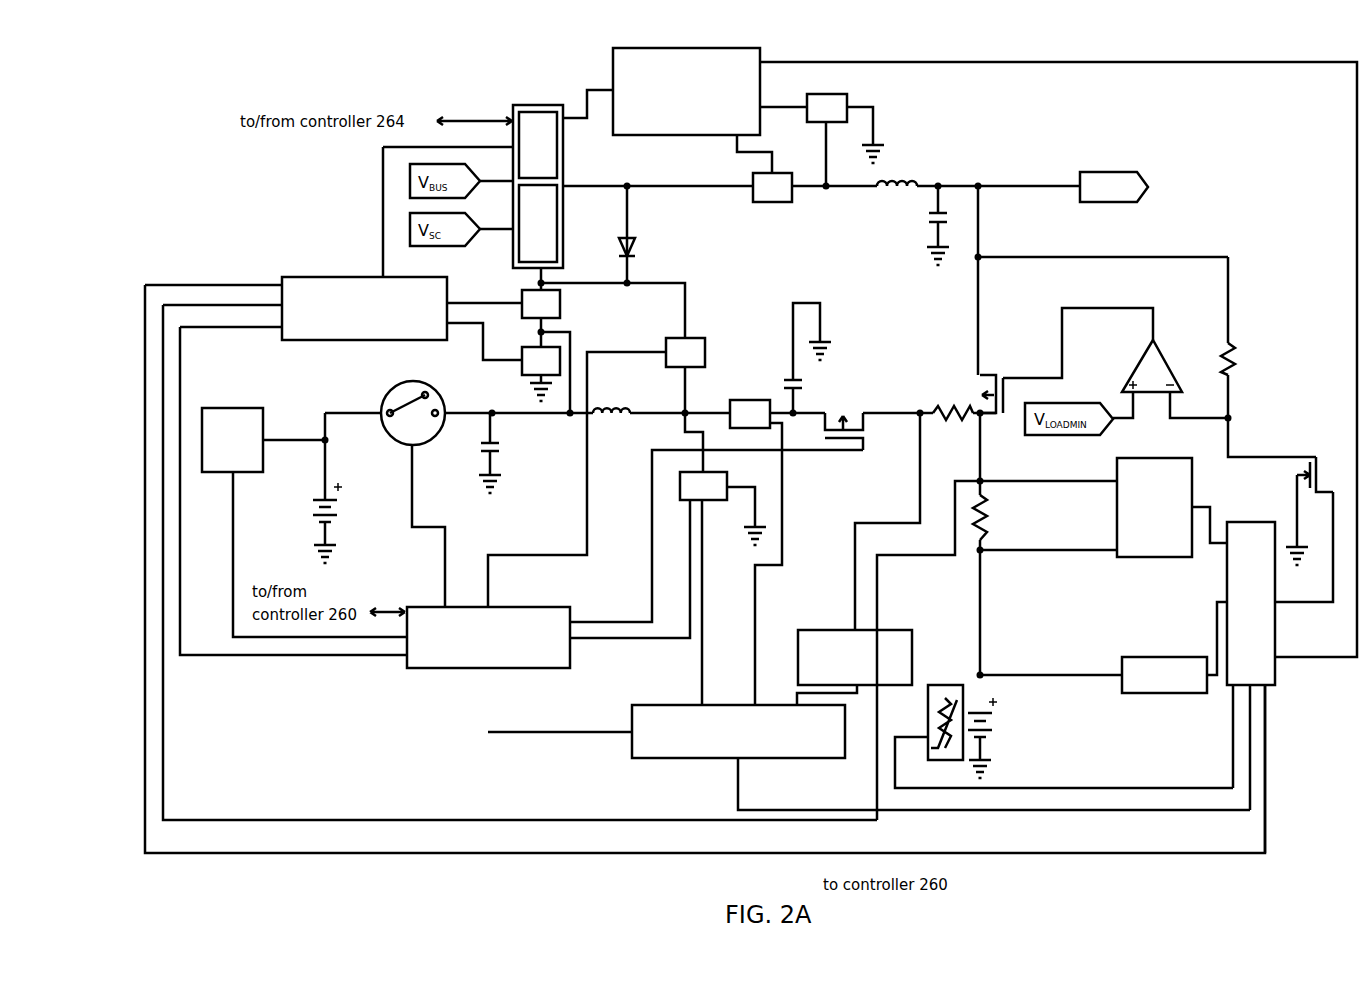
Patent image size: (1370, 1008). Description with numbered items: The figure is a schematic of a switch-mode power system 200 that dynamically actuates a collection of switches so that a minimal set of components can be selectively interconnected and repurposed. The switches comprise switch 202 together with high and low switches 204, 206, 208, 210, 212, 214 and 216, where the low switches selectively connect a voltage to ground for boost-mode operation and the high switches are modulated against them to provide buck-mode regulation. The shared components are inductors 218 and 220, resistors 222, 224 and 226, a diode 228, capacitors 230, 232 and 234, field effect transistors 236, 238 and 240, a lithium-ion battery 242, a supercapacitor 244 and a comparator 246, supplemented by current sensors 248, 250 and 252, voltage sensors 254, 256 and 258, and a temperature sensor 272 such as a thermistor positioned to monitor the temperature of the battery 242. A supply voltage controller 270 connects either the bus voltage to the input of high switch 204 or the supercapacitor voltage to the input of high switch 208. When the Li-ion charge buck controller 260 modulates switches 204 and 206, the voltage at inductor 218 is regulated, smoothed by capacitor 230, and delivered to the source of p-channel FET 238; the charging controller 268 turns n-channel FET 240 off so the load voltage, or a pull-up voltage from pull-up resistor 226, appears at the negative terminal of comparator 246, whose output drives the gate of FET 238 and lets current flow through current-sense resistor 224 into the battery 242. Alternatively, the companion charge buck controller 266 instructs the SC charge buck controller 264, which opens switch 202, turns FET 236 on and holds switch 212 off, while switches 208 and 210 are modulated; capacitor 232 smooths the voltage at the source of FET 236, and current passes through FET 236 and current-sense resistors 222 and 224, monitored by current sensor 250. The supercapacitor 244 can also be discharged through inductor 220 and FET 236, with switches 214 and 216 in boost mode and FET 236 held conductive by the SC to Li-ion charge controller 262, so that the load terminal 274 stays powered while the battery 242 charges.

The switch-mode power system 200 is at (268, 67).
The switch 202 is at (400, 397).
The switch HS1 204 is at (755, 182).
The switch LS1 206 is at (845, 108).
The switch HS2 208 is at (562, 305).
The switch LS2 210 is at (522, 370).
The switch HS3 212 is at (705, 345).
The switch LS3/4 214 is at (727, 478).
The switch HS4 216 is at (750, 398).
The inductor 218 is at (905, 175).
The inductor 220 is at (614, 420).
The current-sense resistor 222 is at (962, 425).
The current-sense resistor 224 is at (990, 510).
The pull-up resistor 226 is at (1240, 360).
The diode 228 is at (638, 248).
The capacitor 230 is at (922, 220).
The capacitor 232 is at (778, 378).
The capacitor 234 is at (503, 445).
The p-channel field effect transistor 236 is at (845, 412).
The p-channel field effect transistor 238 is at (998, 368).
The n-channel field effect transistor 240 is at (1302, 450).
The lithium-ion battery 242 is at (1003, 730).
The supercapacitor 244 is at (300, 510).
The comparator 246 is at (1172, 368).
The current sensor 248 is at (555, 255).
The current sensor 250 is at (905, 643).
The current sensor 252 is at (1170, 470).
The voltage sensor 254 is at (535, 118).
The voltage sensor 256 is at (230, 408).
The voltage sensor 258 is at (1165, 693).
The Li-ion charge buck controller 260 is at (660, 55).
The SC to Li-ion charge controller 262 is at (632, 745).
The SC charge buck controller 264 is at (462, 670).
The companion charge buck controller 266 is at (325, 282).
The charging controller 268 is at (1268, 667).
The supply voltage controller 270 is at (510, 110).
The temperature sensor 272 is at (938, 688).
The load voltage terminal 274 is at (1113, 173).